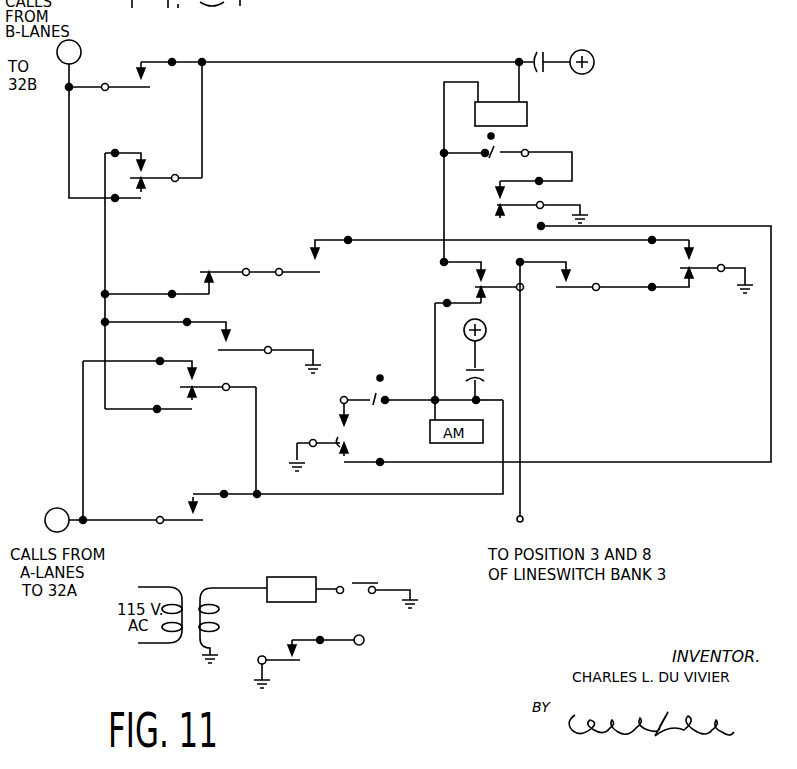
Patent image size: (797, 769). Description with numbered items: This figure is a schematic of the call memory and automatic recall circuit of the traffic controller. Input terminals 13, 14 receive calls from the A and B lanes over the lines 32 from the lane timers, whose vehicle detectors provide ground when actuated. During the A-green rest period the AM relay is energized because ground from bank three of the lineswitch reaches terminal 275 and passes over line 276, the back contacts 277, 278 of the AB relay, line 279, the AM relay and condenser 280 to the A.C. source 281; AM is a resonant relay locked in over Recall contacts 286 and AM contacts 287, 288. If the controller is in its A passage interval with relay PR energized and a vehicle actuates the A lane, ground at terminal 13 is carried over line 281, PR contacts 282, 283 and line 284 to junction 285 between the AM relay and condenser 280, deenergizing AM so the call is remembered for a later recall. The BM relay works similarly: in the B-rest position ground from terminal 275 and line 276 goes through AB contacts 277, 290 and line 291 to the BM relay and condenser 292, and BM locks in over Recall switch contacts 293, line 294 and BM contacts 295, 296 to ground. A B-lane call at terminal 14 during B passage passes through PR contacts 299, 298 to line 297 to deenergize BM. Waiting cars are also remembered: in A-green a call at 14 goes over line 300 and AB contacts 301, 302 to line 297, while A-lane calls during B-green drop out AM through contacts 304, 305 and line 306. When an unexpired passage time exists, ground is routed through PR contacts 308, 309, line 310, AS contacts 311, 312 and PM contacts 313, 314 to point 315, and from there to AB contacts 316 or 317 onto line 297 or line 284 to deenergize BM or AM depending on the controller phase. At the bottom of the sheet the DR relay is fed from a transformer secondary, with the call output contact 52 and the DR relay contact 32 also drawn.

The input terminal 13 is at (48, 512).
The input terminal 14 is at (81, 47).
The lines 32 is at (356, 646).
The call output contact 52 is at (330, 576).
The terminal 275 is at (524, 517).
The line 276 is at (522, 382).
The AB relay contact 277 is at (483, 292).
The AB relay back contact 278 is at (459, 306).
The line 279 is at (433, 345).
The condenser 280 is at (484, 371).
The A.C. source 281 is at (102, 523).
The PR relay contact 282 is at (172, 523).
The PR relay contact 283 is at (208, 497).
The line 284 is at (376, 497).
The junction 285 is at (480, 397).
The Recall contacts 286 is at (362, 394).
The AM relay contact 287 is at (338, 428).
The AM relay contact 288 is at (334, 453).
The AB relay contact 290 is at (448, 263).
The line 291 is at (444, 208).
The condenser 292 is at (536, 52).
The Recall switch contacts 293 is at (502, 152).
The line 294 is at (573, 167).
The BM relay contact 295 is at (494, 179).
The BM relay contact 296 is at (532, 207).
The line 297 is at (304, 61).
The PR relay contact 298 is at (144, 60).
The PR relay contact 299 is at (120, 92).
The line 300 is at (66, 158).
The AB relay contact 301 is at (118, 200).
The AB relay contact 302 is at (156, 181).
The contact 304 is at (192, 362).
The contact 305 is at (197, 392).
The line 306 is at (261, 444).
The PR relay contact 308 is at (693, 280).
The PR relay contact 309 is at (690, 240).
The line 310 is at (579, 250).
The AS relay contact 311 is at (319, 231).
The AS relay contact 312 is at (290, 274).
The PM relay contact 313 is at (210, 271).
The PM relay contact 314 is at (210, 296).
The line 315 is at (106, 260).
The AB relay contact 316 is at (135, 154).
The AB relay contact 317 is at (176, 412).